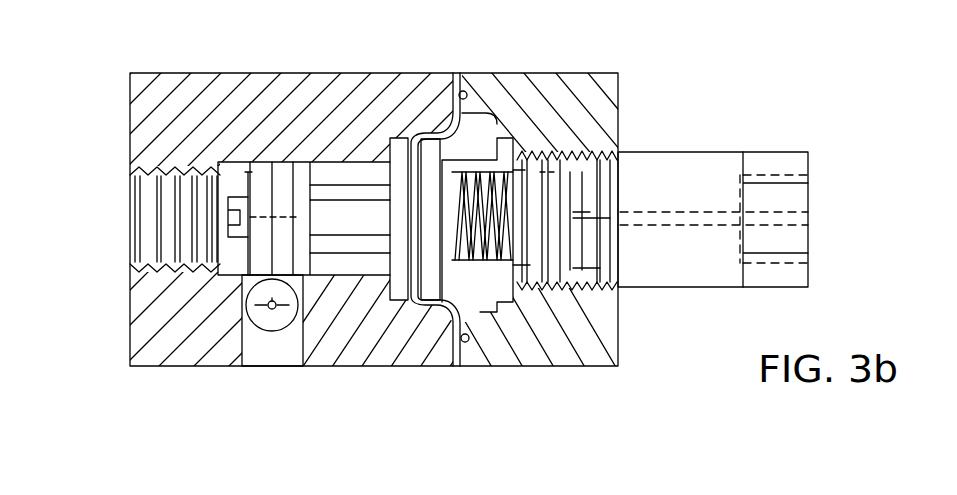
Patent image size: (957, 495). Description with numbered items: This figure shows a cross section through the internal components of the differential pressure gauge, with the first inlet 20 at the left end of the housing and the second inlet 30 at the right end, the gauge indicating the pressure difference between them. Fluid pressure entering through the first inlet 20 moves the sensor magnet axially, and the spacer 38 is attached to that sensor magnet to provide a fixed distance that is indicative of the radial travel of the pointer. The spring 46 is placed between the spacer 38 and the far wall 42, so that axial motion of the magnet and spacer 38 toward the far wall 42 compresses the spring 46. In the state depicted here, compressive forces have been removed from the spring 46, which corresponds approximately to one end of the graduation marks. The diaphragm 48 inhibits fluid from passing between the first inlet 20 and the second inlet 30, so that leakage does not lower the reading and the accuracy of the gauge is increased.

The first inlet 20 is at (131, 248).
The second inlet 30 is at (795, 200).
The spacer 38 is at (365, 243).
The far wall 42 is at (612, 154).
The spring 46 is at (480, 170).
The diaphragm 48 is at (457, 312).